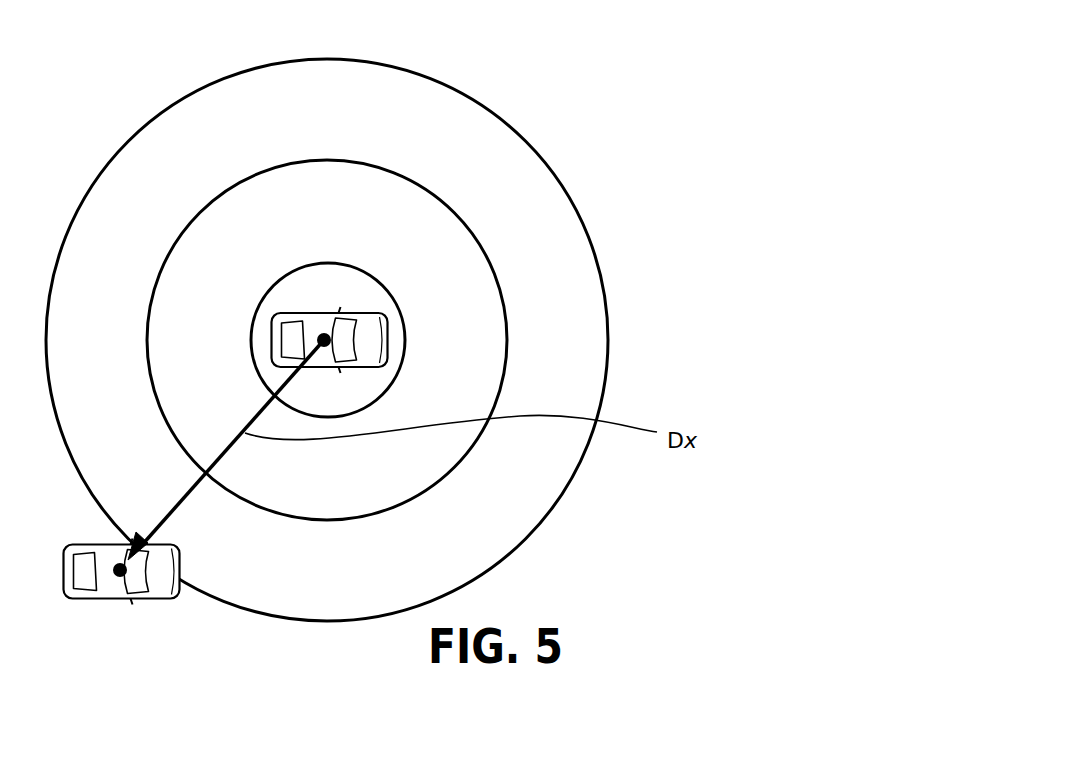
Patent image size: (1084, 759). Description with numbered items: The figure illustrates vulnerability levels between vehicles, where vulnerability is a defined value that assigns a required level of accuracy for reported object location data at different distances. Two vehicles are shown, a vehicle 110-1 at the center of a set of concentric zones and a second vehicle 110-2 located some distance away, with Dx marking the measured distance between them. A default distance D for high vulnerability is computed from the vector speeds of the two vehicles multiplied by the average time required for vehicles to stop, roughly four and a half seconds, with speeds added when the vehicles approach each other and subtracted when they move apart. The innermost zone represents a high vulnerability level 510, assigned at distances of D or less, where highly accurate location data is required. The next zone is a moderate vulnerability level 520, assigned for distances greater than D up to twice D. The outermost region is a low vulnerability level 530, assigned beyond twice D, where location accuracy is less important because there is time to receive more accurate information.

The high vulnerability level 510 is at (365, 272).
The moderate vulnerability level 520 is at (490, 262).
The low vulnerability level 530 is at (601, 276).
The vehicle 110-1 is at (270, 317).
The vehicle 110-2 is at (112, 598).